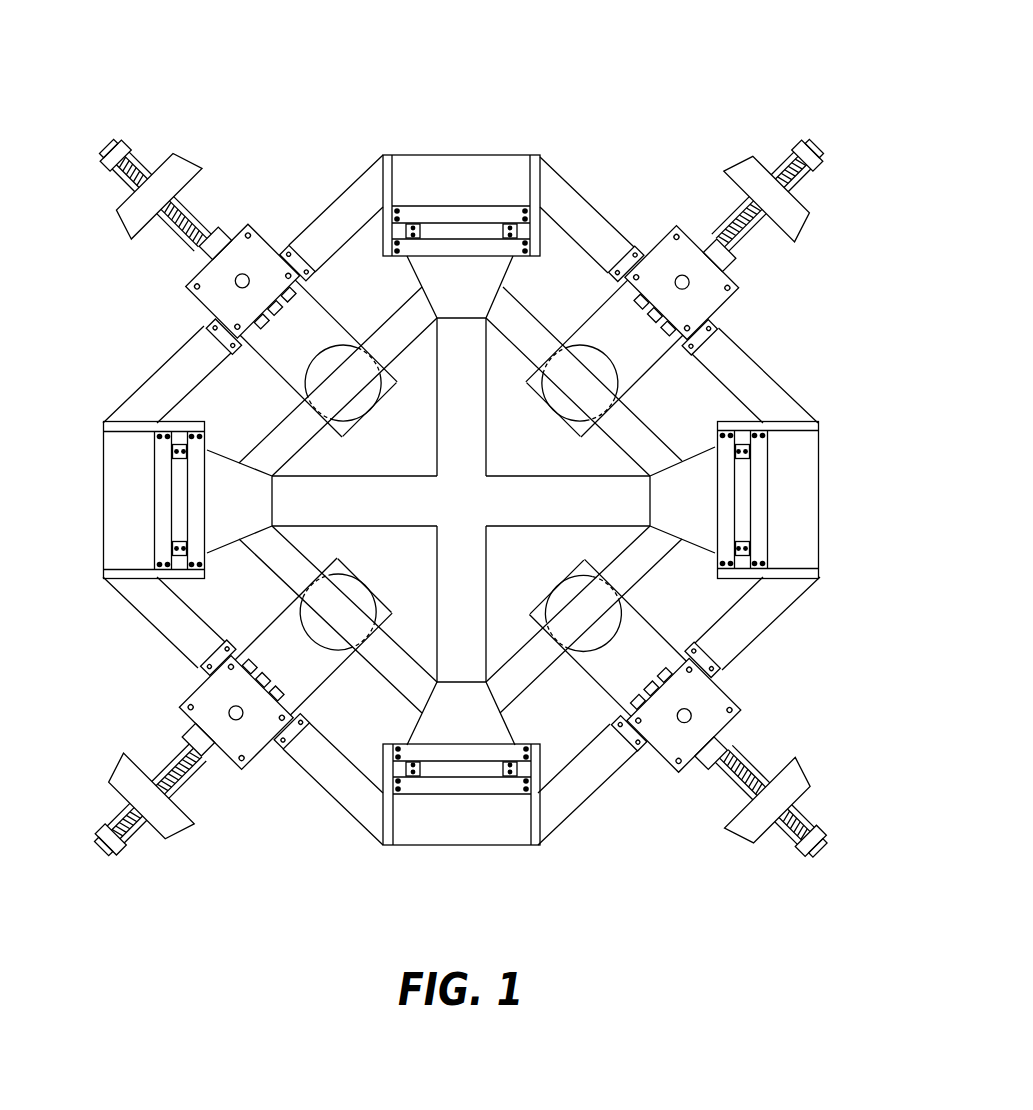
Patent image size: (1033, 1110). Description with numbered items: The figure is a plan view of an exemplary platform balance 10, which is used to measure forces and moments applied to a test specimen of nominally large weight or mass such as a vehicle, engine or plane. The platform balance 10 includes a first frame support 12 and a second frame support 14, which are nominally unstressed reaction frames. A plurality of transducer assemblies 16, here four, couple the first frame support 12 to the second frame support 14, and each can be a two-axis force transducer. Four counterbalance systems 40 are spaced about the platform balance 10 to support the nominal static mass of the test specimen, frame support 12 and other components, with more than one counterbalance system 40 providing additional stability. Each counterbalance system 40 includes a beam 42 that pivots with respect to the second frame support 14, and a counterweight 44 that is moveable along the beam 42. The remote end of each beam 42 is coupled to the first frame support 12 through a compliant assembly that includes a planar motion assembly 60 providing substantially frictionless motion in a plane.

The platform balance 10 is at (736, 110).
The first frame support 12 is at (662, 416).
The second frame support 14 is at (598, 172).
The transducer assemblies 16 is at (473, 138).
The counterbalance system 40 is at (851, 162).
The beam 42 is at (590, 317).
The counterweight 44 is at (812, 218).
The planar motion assembly 60 is at (576, 434).